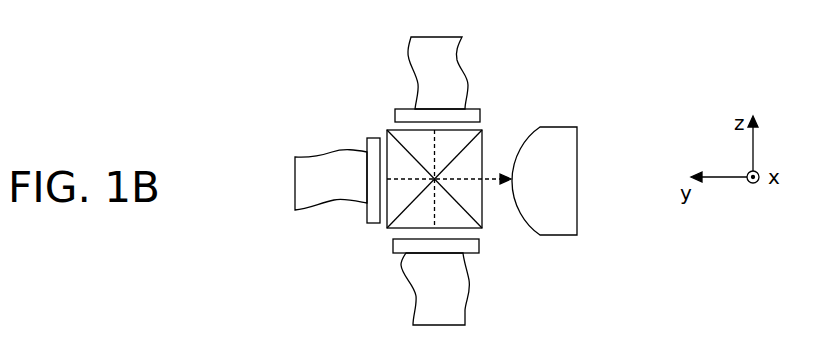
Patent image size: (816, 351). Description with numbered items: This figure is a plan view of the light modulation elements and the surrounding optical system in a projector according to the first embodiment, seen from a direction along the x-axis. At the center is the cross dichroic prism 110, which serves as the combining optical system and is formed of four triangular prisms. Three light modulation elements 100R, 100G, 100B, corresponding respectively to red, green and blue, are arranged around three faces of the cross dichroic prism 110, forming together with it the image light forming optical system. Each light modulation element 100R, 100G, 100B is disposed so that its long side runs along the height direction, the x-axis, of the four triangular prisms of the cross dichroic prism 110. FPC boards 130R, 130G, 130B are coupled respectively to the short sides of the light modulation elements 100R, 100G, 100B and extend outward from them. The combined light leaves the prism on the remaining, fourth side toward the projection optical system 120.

The cross dichroic prism 110 is at (483, 147).
The light modulation element 100R is at (395, 111).
The light modulation element 100G is at (368, 223).
The light modulation element 100B is at (480, 253).
The FPC board 130R is at (408, 40).
The FPC board 130G is at (312, 210).
The FPC board 130B is at (468, 290).
The projection optical system 120 is at (558, 127).